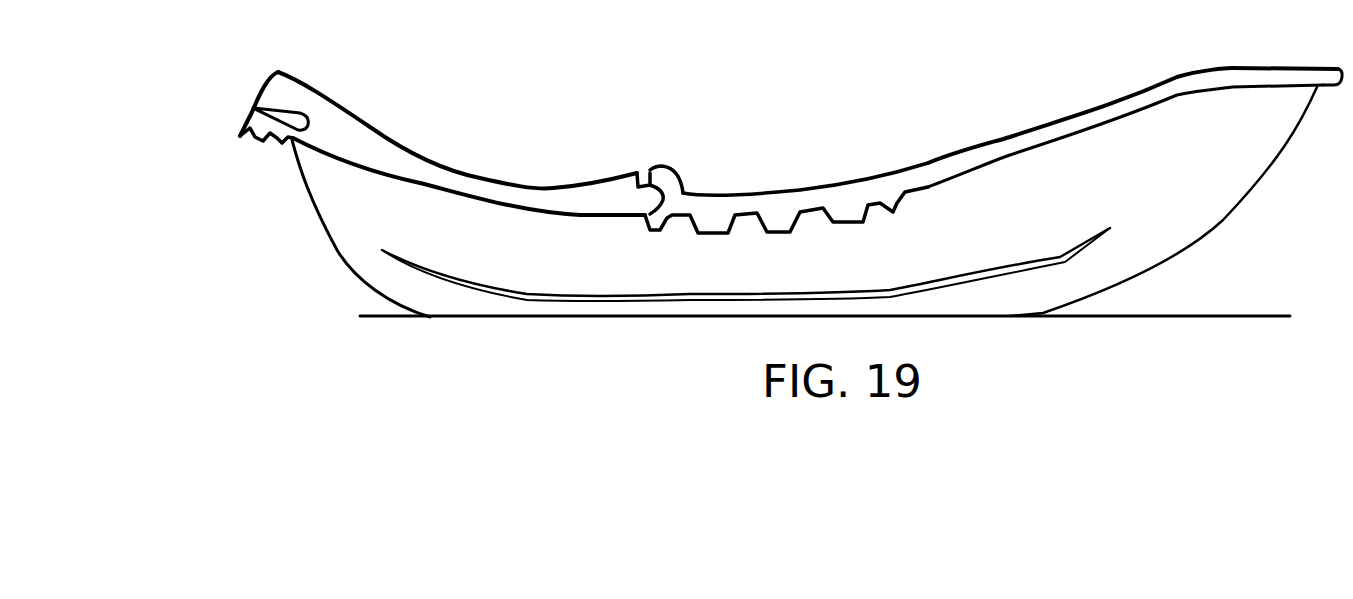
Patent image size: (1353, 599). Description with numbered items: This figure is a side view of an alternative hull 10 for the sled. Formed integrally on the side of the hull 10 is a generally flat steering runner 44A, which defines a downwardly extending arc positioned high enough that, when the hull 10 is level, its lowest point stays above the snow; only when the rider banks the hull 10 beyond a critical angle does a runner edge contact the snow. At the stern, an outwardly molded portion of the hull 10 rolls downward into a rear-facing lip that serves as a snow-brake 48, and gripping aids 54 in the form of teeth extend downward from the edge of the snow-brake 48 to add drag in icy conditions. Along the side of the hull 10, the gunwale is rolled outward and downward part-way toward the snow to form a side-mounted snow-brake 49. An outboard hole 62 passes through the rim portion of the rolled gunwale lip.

The hull 10 is at (1223, 220).
The steering runner 44A is at (552, 297).
The snow-brake 48 is at (271, 170).
The side-mounted snow-brake 49 is at (777, 168).
The gripping aids 54 is at (258, 143).
The outboard hole 62 is at (640, 170).